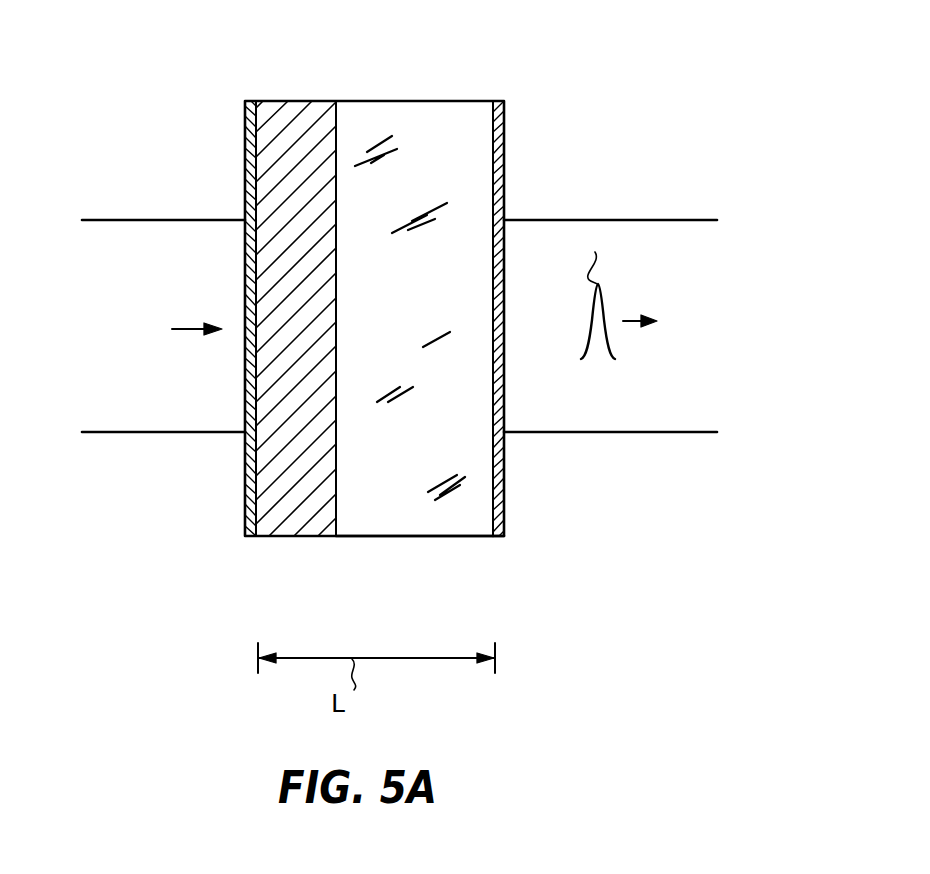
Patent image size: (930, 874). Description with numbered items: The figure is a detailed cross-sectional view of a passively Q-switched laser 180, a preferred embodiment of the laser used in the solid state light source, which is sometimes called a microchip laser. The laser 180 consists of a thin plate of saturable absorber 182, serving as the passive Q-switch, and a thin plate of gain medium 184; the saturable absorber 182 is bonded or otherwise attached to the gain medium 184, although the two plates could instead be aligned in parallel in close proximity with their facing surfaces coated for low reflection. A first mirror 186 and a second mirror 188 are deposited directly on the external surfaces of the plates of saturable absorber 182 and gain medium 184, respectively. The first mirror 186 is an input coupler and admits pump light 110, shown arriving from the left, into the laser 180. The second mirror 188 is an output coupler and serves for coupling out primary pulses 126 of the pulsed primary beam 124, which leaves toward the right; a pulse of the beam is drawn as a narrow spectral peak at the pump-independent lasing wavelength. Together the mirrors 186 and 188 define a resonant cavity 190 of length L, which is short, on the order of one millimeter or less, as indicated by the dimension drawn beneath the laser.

The pump light 110 is at (148, 220).
The pulsed primary beam 124 is at (650, 219).
The primary pulses 126 is at (606, 304).
The passively Q-switched laser 180 is at (163, 513).
The saturable absorber 182 is at (298, 101).
The gain medium 184 is at (413, 537).
The first mirror 186 is at (253, 537).
The second mirror 188 is at (501, 101).
The resonant cavity 190 is at (505, 563).